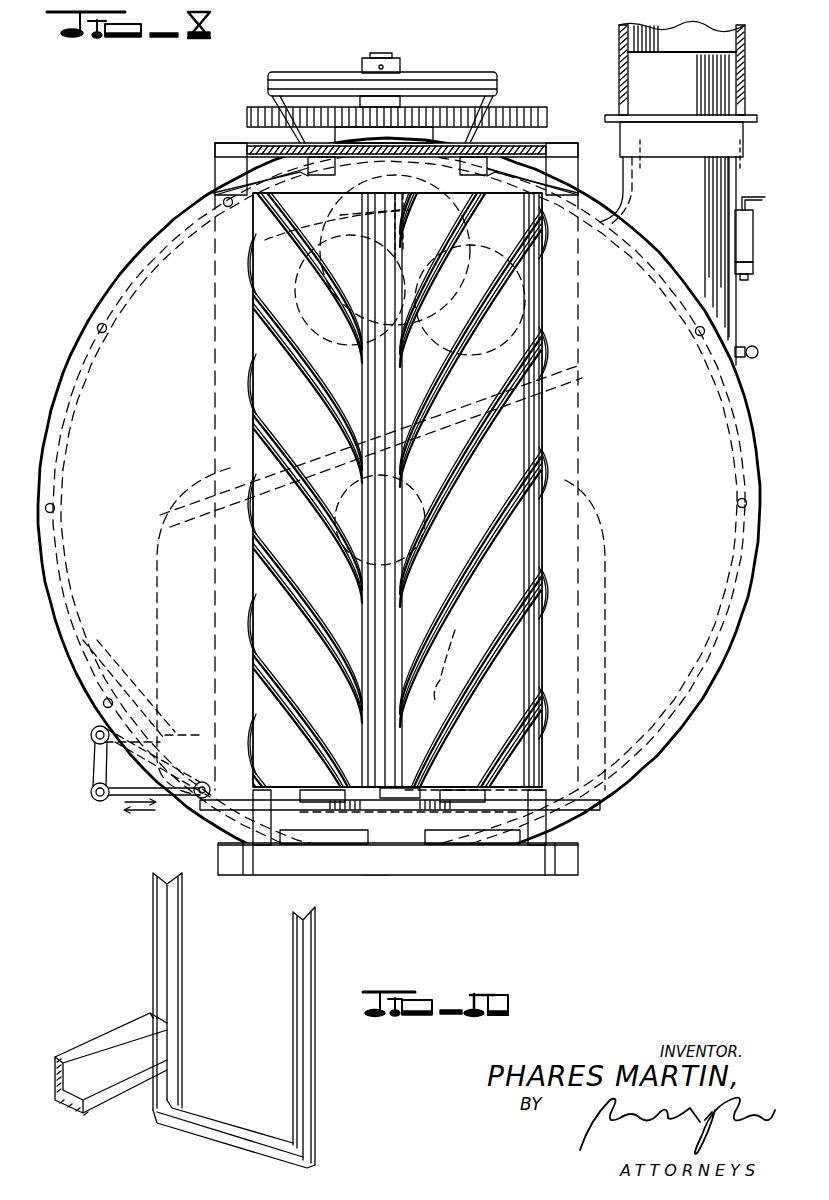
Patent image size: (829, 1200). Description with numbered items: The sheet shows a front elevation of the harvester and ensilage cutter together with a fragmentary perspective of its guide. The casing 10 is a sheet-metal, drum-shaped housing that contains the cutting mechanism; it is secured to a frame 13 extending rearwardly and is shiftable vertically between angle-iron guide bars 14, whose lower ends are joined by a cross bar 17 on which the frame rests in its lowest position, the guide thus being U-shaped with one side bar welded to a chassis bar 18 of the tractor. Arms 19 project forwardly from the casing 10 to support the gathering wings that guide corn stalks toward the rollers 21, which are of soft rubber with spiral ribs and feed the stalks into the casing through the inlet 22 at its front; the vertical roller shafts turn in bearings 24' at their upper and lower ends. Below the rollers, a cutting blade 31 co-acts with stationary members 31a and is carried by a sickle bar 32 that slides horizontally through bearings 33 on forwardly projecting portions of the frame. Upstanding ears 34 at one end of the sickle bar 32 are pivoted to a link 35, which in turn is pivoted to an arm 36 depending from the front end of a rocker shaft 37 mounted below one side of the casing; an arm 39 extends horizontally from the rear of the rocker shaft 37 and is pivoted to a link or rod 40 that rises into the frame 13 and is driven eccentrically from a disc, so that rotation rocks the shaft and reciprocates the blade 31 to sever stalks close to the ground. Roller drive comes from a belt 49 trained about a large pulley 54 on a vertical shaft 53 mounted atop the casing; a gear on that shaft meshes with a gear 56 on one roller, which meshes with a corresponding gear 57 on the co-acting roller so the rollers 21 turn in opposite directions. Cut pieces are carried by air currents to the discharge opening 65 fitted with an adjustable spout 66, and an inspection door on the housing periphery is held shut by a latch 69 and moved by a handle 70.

In FIG. 8, the casing 10 is at (158, 298).
In FIG. 8, the frame 13 is at (222, 168).
In FIG. 19, the guide bars 14 is at (160, 893).
In FIG. 19, the cross bar 17 is at (228, 1122).
In FIG. 19, the chassis bar 18 is at (112, 1038).
In FIG. 8, the arms 19 is at (580, 862).
In FIG. 8, the rollers 21 is at (535, 393).
In FIG. 8, the inlet 22 is at (437, 688).
In FIG. 8, the bearings 24' is at (343, 216).
In FIG. 8, the cutting blade 31 is at (455, 762).
In FIG. 8, the stationary members 31a is at (340, 815).
In FIG. 8, the sickle bar 32 is at (215, 815).
In FIG. 8, the bearings 33 is at (265, 800).
In FIG. 8, the upstanding ears 34 is at (205, 780).
In FIG. 8, the link 35 is at (118, 796).
In FIG. 8, the arm 36 is at (92, 772).
In FIG. 8, the rocker shaft 37 is at (90, 736).
In FIG. 8, the arm 39 is at (152, 688).
In FIG. 8, the link or rod 40 is at (337, 408).
In FIG. 8, the belt 49 is at (305, 84).
In FIG. 8, the vertical shaft 53 is at (398, 64).
In FIG. 8, the large pulley 54 is at (468, 78).
In FIG. 8, the gear 56 is at (252, 118).
In FIG. 8, the gear 57 is at (530, 107).
In FIG. 8, the discharge opening 65 is at (718, 192).
In FIG. 8, the adjustable spout 66 is at (740, 85).
In FIG. 8, the latch 69 is at (756, 245).
In FIG. 8, the handle 70 is at (747, 340).